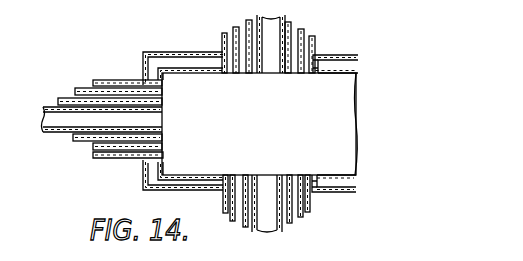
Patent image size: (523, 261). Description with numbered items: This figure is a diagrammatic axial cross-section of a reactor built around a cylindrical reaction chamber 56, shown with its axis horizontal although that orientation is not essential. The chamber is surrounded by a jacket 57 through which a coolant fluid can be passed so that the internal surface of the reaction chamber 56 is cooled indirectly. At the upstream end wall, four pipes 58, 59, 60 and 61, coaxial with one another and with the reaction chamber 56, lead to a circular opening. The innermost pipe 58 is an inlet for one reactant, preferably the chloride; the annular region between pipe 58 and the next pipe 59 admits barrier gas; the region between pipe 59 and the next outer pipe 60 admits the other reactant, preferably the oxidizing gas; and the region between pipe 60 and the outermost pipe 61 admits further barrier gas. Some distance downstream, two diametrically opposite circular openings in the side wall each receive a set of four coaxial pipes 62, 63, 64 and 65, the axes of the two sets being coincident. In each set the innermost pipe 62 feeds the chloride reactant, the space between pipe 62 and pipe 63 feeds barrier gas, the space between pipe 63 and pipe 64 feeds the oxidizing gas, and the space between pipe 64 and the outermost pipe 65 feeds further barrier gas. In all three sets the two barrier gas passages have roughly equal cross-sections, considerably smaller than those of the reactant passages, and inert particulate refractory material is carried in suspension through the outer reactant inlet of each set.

The cylindrical reaction chamber 56 is at (337, 72).
The jacket 57 is at (322, 55).
The innermost pipe 58 is at (53, 133).
The pipe 59 is at (63, 99).
The pipe 60 is at (80, 88).
The outermost pipe 61 is at (110, 80).
The innermost pipe 62 is at (284, 18).
The pipe 63 is at (248, 27).
The pipe 64 is at (236, 29).
The outermost pipe 65 is at (222, 45).